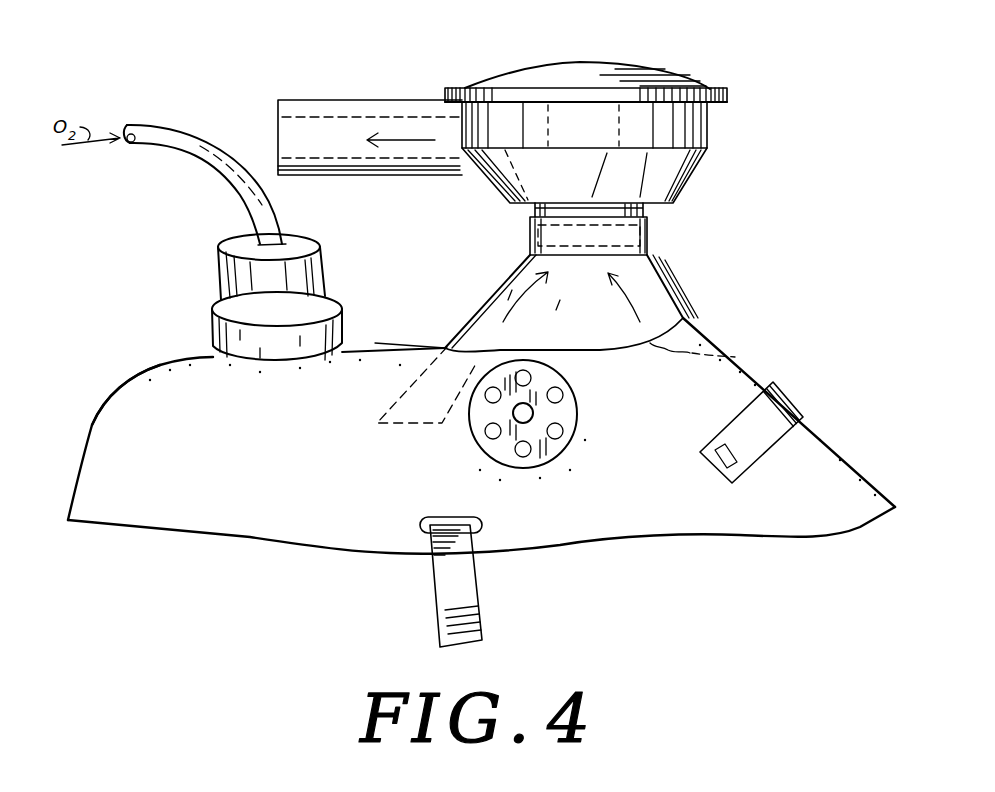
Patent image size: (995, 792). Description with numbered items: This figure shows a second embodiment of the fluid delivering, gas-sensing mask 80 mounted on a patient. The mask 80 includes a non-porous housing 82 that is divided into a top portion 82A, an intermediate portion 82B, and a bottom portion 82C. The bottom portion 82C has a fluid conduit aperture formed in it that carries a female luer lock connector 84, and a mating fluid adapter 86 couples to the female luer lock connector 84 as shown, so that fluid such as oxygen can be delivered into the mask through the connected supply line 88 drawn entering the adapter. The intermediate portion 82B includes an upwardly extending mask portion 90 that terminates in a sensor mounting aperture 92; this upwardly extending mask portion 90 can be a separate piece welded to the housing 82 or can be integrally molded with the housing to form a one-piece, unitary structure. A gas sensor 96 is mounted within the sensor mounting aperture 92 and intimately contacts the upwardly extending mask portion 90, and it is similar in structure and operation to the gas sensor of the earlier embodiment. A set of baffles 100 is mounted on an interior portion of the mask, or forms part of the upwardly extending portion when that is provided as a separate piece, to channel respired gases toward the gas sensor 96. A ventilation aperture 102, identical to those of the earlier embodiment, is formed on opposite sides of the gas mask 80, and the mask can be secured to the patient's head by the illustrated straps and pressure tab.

The gas-sensing mask 80 is at (795, 68).
The non-porous housing 82 is at (752, 333).
The top portion 82A is at (815, 435).
The intermediate portion 82B is at (383, 343).
The bottom portion 82C is at (148, 370).
The female luer lock connector 84 is at (210, 337).
The fluid adapter 86 is at (303, 230).
The oxygen supply tube 88 is at (182, 132).
The upwardly extending mask portion 90 is at (657, 277).
The sensor mounting aperture 92 is at (637, 213).
The gas sensor 96 is at (650, 74).
The baffles 100 is at (395, 388).
The ventilation aperture 102 is at (563, 422).